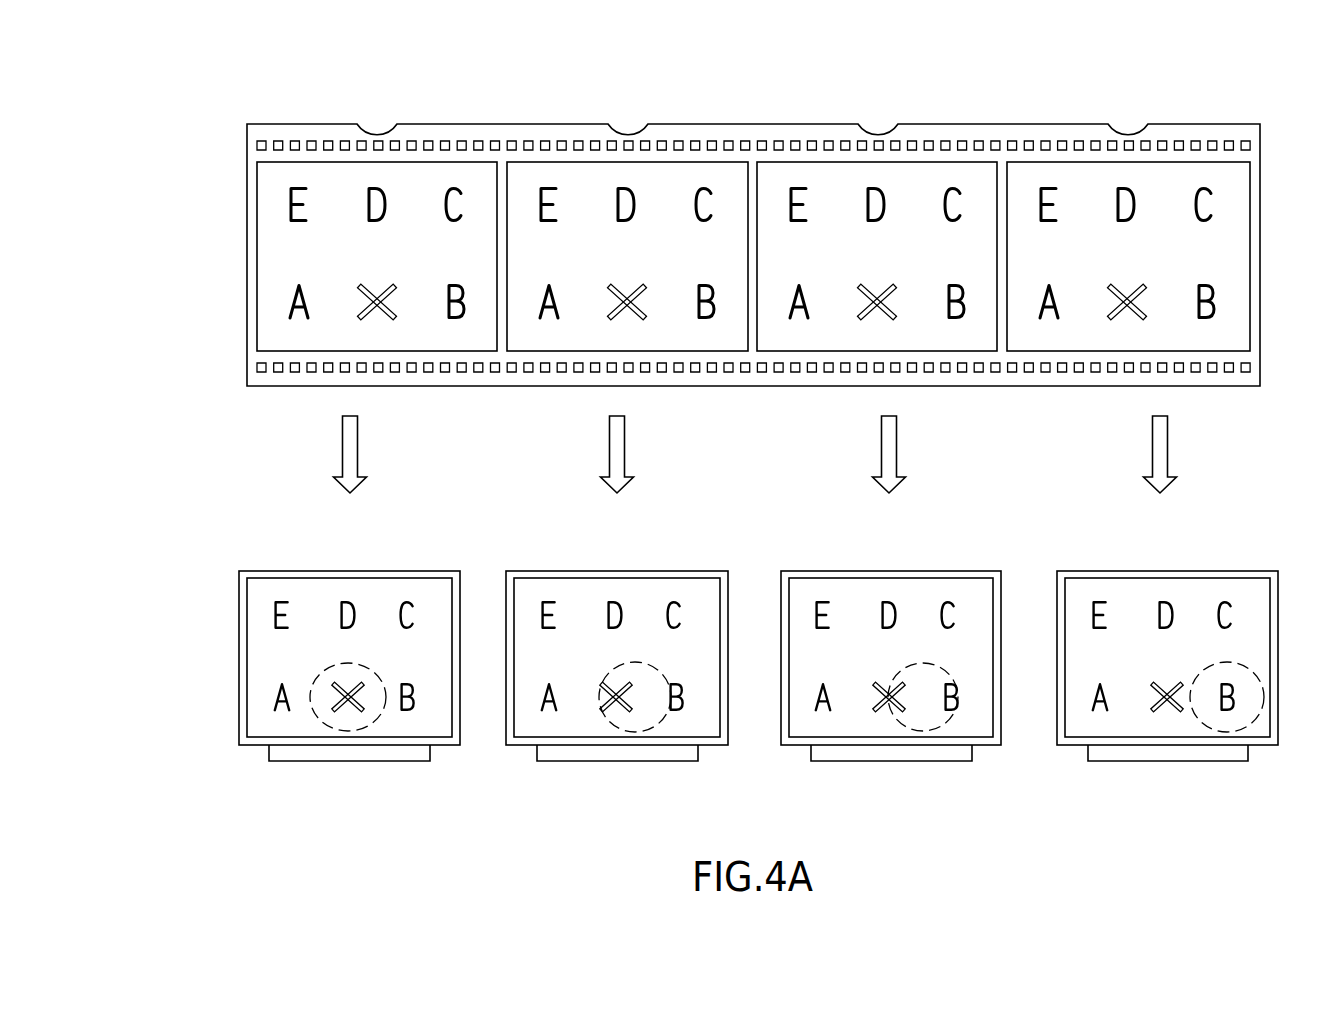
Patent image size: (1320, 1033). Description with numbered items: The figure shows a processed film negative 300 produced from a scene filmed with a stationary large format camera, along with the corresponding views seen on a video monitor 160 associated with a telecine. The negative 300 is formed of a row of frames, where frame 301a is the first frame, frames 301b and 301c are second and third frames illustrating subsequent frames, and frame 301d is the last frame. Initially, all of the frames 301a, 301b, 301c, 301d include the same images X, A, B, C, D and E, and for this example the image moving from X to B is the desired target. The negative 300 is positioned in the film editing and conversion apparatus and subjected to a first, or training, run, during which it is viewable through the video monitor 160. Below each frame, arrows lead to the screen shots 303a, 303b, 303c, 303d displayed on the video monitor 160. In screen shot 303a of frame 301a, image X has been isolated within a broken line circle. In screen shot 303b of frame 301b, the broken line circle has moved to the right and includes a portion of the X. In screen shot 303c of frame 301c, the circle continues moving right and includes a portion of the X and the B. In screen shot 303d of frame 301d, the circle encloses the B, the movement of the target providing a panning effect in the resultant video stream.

The negative 300 is at (285, 112).
The first frame 301a is at (418, 188).
The second frame 301b is at (668, 188).
The third frame 301c is at (918, 188).
The last frame 301d is at (1168, 188).
The video monitor 160 is at (327, 570).
The screen shot 303a is at (370, 622).
The screen shot 303b is at (639, 622).
The screen shot 303c is at (910, 622).
The screen shot 303d is at (1190, 622).